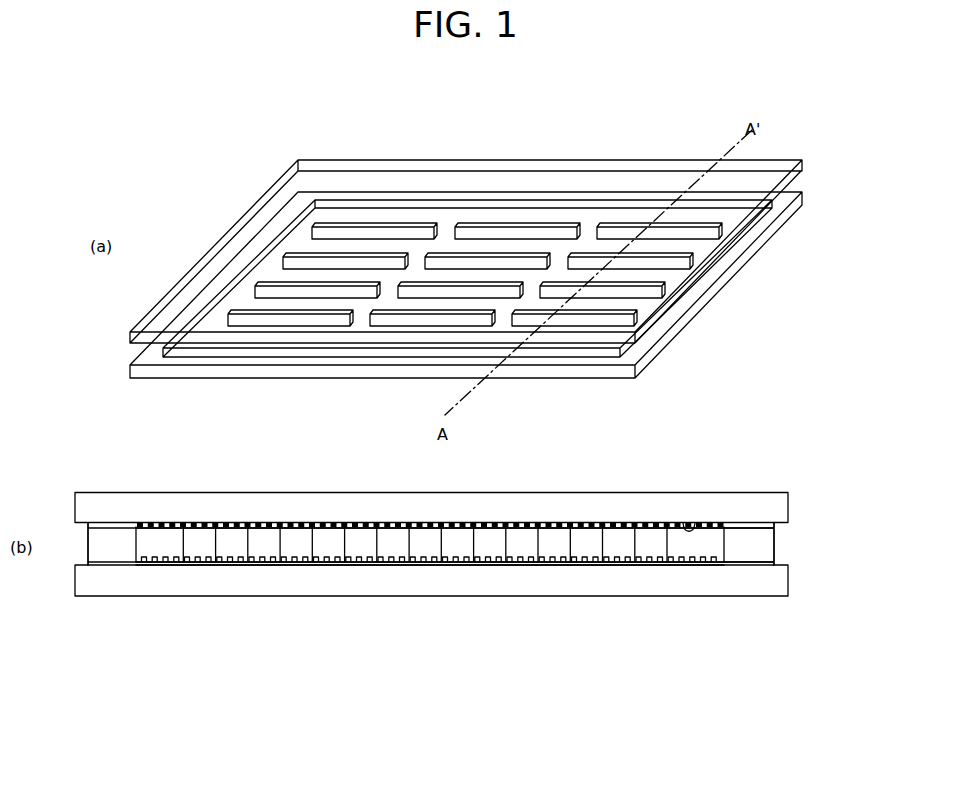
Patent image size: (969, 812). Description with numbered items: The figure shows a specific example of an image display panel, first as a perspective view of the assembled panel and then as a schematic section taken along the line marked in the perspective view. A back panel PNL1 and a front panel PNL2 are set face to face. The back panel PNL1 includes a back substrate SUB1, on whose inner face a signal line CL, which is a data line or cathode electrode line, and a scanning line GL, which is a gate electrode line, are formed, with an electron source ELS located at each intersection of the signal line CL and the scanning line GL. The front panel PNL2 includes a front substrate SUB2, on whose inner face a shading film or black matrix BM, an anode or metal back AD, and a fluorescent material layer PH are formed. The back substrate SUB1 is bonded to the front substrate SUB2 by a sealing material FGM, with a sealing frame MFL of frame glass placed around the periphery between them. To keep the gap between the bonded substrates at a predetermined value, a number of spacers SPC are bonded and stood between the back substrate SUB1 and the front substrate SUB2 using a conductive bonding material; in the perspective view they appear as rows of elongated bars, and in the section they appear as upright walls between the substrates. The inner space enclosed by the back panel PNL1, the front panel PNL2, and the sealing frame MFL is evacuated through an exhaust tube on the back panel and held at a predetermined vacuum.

The back panel PNL1 is at (488, 428).
The front panel PNL2 is at (488, 320).
The back substrate SUB1 is at (605, 380).
The front substrate SUB2 is at (793, 176).
The spacer SPC is at (348, 228).
The sealing frame MFL is at (548, 350).
The fluorescent material layer PH is at (310, 525).
The shading film BM is at (325, 522).
The anode AD is at (697, 520).
The sealing material FGM is at (753, 522).
The scanning line GL is at (335, 562).
The signal line CL is at (548, 565).
The electron source ELS is at (622, 562).